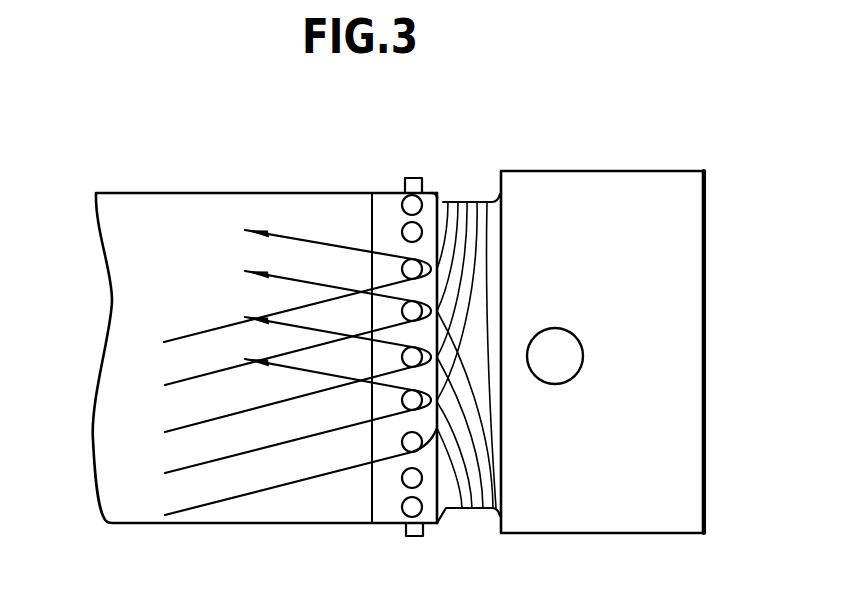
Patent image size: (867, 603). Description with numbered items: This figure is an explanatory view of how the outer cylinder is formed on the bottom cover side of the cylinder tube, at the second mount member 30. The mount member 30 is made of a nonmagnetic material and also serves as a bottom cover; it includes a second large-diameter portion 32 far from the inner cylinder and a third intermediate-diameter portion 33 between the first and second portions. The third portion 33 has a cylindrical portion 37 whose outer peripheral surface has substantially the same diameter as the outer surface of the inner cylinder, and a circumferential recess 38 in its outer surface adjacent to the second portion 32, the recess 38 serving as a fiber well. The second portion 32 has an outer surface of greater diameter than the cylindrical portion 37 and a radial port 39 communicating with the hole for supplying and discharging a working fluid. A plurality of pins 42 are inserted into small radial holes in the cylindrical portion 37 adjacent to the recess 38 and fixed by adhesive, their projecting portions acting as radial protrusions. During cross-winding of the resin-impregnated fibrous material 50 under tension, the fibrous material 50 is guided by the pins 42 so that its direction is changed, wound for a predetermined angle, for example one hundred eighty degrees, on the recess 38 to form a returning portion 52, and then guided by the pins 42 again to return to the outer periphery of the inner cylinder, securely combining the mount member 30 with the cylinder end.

The second mount member 30 is at (552, 148).
The second large-diameter portion 32 is at (683, 293).
The third intermediate-diameter portion 33 is at (416, 537).
The cylindrical portion 37 is at (350, 212).
The circumferential recess 38 is at (496, 512).
The radial port 39 is at (563, 366).
The pins 42 is at (427, 203).
The fibrous material 50 is at (283, 230).
The returning portion 52 is at (487, 202).